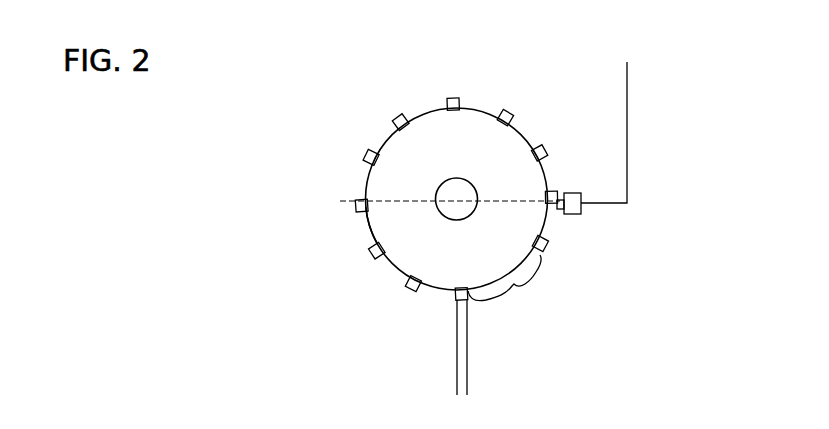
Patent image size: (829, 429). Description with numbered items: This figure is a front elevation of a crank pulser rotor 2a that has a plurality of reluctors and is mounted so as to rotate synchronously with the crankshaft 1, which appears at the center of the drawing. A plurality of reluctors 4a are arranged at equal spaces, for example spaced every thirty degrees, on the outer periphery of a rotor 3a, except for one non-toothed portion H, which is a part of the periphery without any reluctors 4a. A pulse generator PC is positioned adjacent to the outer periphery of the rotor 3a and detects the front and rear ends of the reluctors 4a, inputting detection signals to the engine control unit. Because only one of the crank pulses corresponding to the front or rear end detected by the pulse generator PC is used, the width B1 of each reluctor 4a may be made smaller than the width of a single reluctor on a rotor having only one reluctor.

The crankshaft 1 is at (446, 210).
The crank pulser rotor 2a is at (385, 131).
The rotor 3a is at (371, 226).
The reluctors 4a is at (357, 208).
The pulse generator PC is at (574, 184).
The non-toothed portion H is at (520, 300).
The width of each reluctor B1 is at (495, 370).